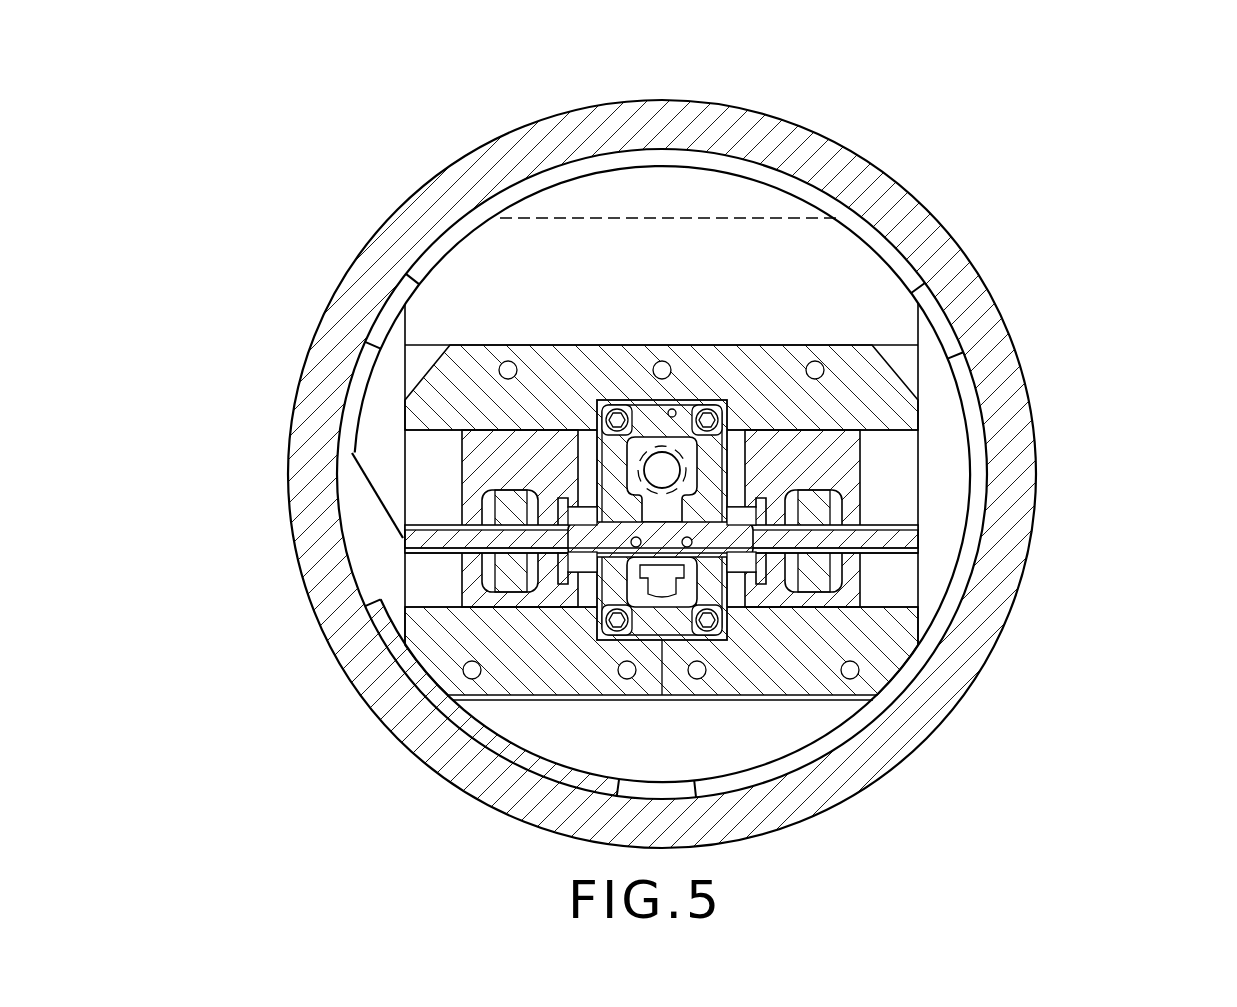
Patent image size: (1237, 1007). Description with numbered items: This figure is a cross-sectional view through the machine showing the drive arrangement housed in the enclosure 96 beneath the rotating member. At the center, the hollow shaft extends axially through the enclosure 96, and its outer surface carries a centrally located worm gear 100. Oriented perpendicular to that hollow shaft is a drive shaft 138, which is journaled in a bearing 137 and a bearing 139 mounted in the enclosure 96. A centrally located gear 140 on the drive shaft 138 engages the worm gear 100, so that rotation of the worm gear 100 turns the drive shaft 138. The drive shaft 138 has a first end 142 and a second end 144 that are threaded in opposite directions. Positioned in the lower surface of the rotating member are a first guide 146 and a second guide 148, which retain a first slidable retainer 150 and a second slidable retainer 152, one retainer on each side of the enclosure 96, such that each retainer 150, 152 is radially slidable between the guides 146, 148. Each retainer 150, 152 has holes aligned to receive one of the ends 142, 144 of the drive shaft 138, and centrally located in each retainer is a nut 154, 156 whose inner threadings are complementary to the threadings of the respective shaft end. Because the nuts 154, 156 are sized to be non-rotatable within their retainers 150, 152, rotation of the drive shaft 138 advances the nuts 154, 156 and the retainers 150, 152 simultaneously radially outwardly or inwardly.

The enclosure 96 is at (643, 403).
The worm gear 100 is at (665, 462).
The bearing 137 is at (720, 567).
The drive shaft 138 is at (907, 522).
The bearing 139 is at (607, 563).
The gear 140 is at (667, 510).
The first end 142 is at (897, 557).
The second end 144 is at (405, 577).
The first guide 146 is at (598, 682).
The second guide 148 is at (550, 368).
The first slidable retainer 150 is at (780, 438).
The second slidable retainer 152 is at (487, 423).
The nut 154 is at (838, 497).
The nut 156 is at (490, 607).